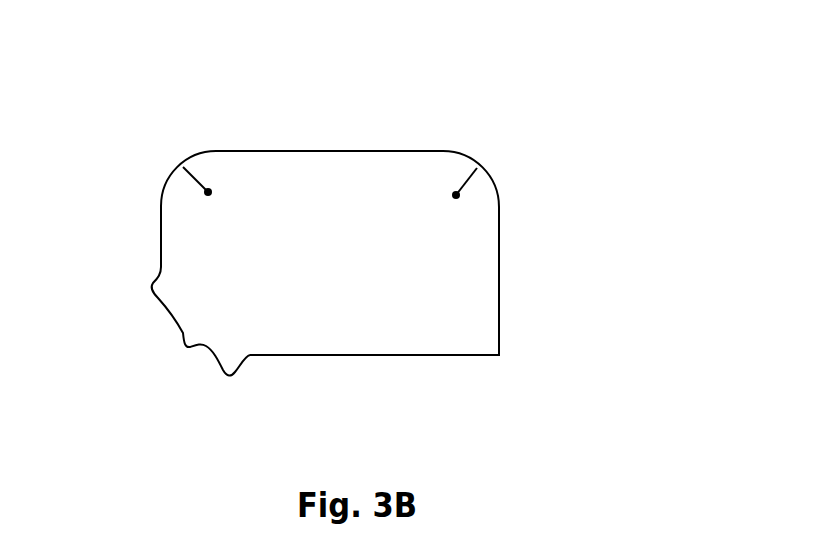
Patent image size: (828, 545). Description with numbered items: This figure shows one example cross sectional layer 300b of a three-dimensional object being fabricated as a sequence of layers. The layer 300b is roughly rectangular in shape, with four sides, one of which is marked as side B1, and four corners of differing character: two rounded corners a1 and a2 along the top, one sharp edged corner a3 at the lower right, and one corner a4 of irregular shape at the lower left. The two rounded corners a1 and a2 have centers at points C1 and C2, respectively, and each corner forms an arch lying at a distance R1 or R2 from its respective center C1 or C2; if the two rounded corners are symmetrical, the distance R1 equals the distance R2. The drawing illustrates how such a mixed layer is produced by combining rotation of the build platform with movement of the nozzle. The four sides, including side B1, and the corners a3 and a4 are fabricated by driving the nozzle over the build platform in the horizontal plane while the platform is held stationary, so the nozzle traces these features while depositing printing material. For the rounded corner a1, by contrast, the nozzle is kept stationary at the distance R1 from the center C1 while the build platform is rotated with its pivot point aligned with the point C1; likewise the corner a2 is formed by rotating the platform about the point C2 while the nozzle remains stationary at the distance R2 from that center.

The cross sectional layer 300b is at (603, 102).
The rounded corner a1 is at (225, 117).
The rounded corner a2 is at (434, 123).
The sharp edged corner a3 is at (510, 363).
The corner having an irregular shape a4 is at (152, 373).
The side B1 is at (433, 112).
The distance R1 is at (205, 176).
The distance R2 is at (453, 176).
The center C1 is at (216, 208).
The center C2 is at (451, 209).